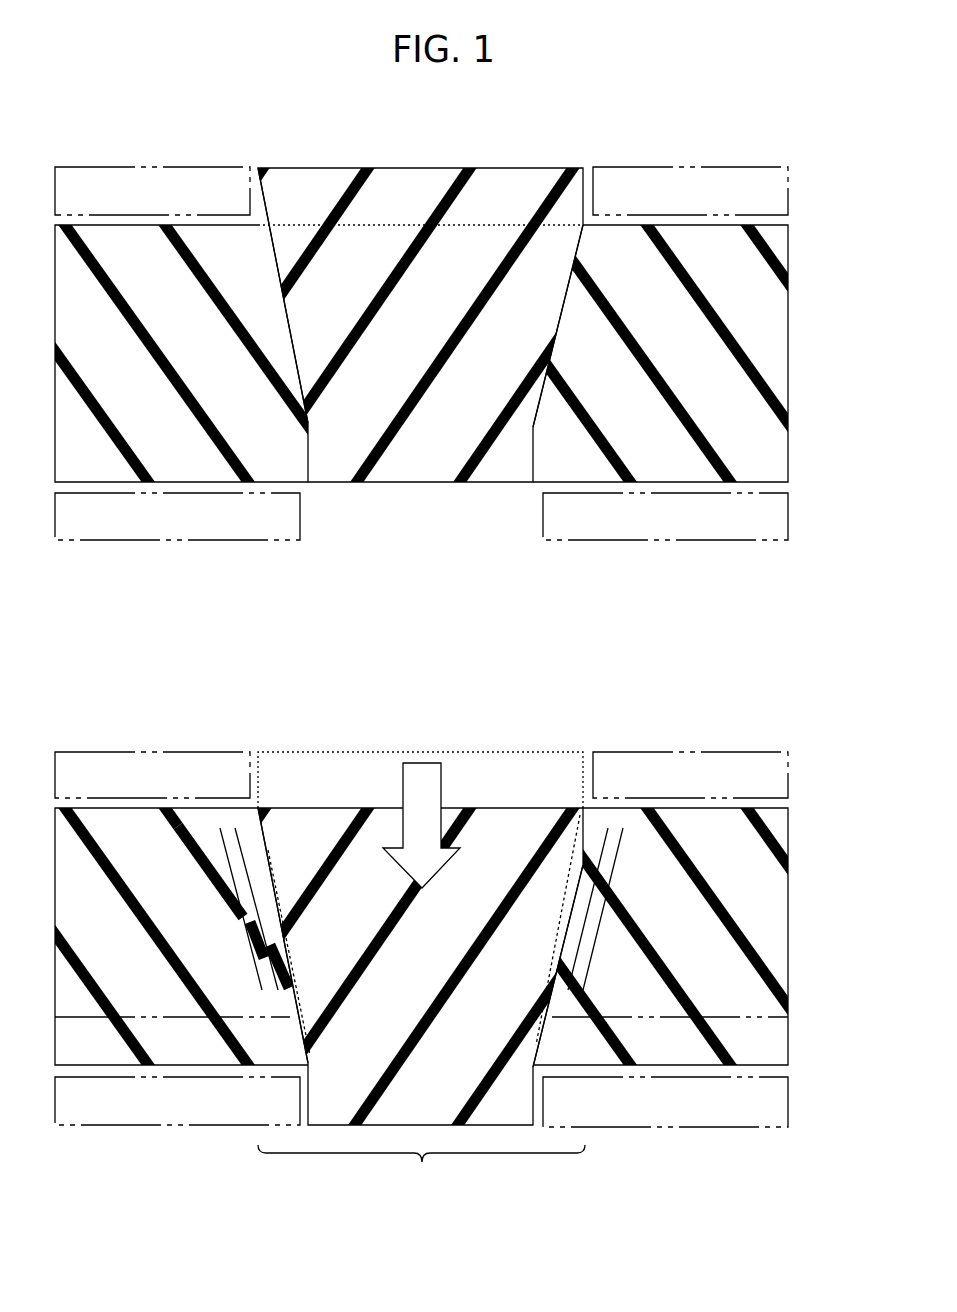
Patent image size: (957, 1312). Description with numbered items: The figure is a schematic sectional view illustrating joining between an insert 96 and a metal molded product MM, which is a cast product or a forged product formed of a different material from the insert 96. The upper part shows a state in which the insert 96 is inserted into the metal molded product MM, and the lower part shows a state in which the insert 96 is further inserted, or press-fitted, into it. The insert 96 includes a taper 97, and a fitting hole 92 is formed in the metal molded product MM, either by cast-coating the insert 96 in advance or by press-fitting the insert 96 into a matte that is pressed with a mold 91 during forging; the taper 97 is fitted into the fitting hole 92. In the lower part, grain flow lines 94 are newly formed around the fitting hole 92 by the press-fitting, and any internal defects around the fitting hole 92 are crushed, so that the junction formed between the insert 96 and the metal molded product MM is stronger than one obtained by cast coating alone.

The mold 91 is at (735, 165).
The metal molded product MM is at (788, 225).
The insert 96 is at (259, 167).
The fitting hole 92 is at (567, 300).
The grain flow lines 94 is at (600, 918).
The taper 97 is at (421, 1170).